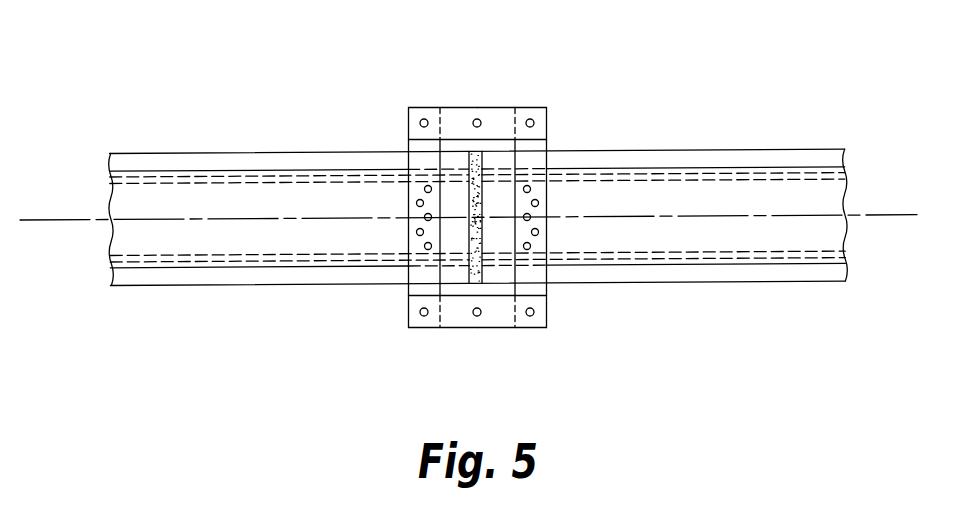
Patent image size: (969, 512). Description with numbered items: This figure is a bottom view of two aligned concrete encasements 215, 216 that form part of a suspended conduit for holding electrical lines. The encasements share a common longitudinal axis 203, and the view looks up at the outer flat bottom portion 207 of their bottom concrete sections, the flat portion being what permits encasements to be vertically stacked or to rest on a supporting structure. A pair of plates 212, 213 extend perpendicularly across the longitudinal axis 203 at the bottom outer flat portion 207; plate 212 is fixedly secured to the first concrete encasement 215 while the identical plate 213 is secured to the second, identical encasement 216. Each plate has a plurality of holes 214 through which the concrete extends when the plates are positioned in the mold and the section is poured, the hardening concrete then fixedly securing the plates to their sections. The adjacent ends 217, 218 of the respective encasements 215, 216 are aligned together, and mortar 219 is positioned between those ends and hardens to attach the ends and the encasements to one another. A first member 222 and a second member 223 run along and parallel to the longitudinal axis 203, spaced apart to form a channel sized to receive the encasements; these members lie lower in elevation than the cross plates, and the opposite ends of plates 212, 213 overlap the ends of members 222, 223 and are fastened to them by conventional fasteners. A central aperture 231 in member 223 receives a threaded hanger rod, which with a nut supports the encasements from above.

The longitudinal axis 203 is at (880, 214).
The outer flat bottom portion 207 is at (742, 172).
The plate 212 is at (410, 158).
The plate 213 is at (543, 146).
The holes 214 is at (416, 203).
The concrete encasement 215 is at (197, 238).
The concrete encasement 216 is at (718, 237).
The adjacent end 217 is at (469, 243).
The adjacent end 218 is at (482, 243).
The mortar 219 is at (483, 272).
The first member 222 is at (461, 317).
The second member 223 is at (501, 113).
The central aperture 231 is at (478, 114).